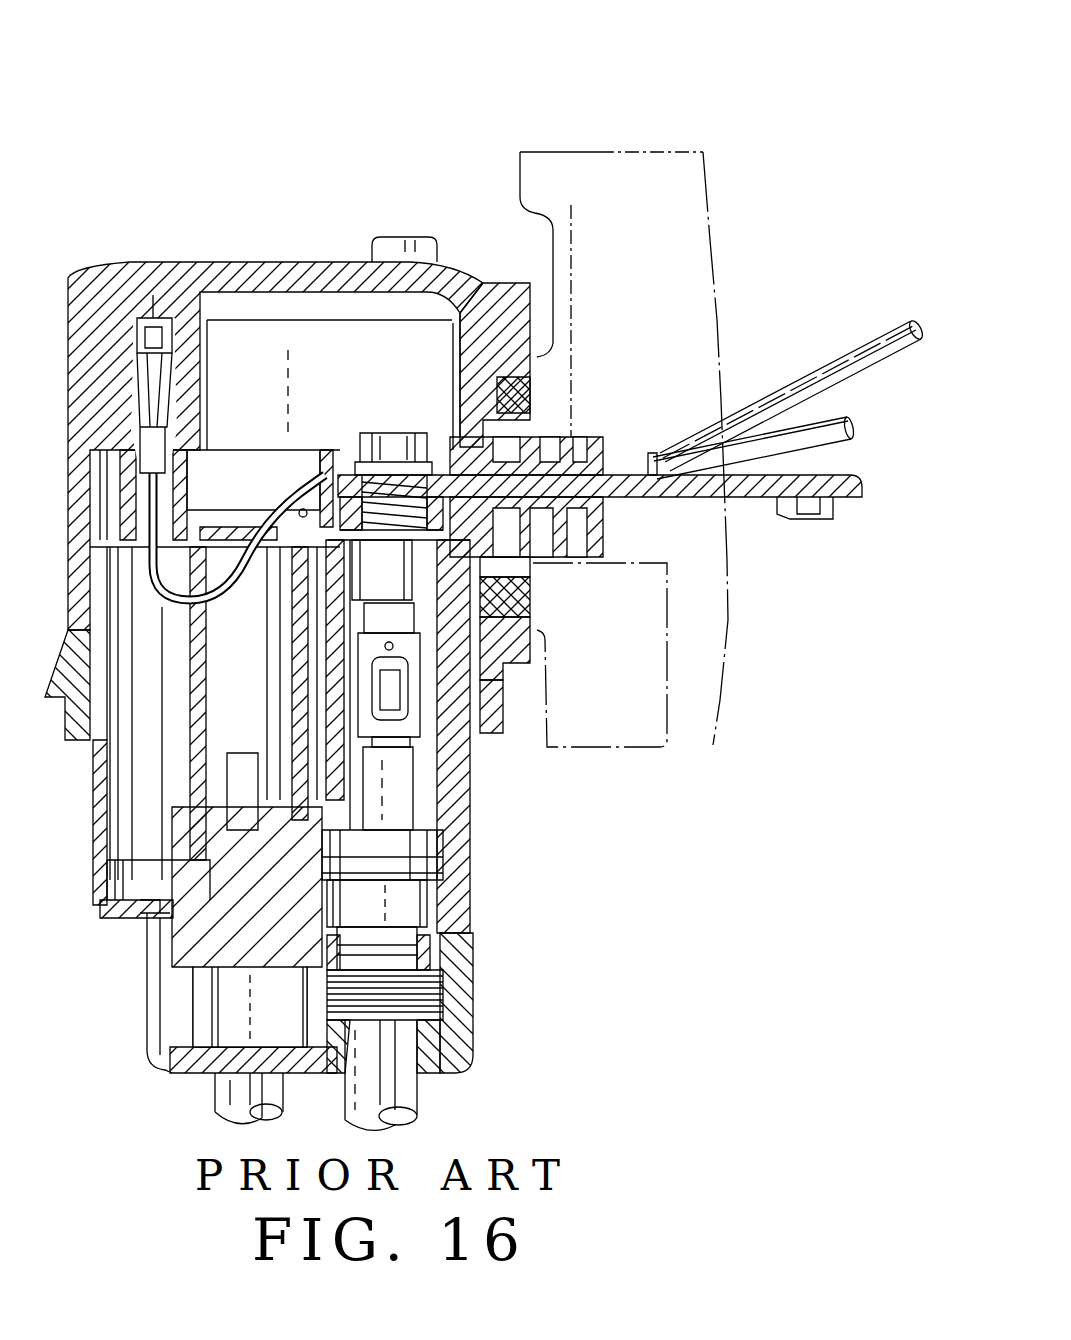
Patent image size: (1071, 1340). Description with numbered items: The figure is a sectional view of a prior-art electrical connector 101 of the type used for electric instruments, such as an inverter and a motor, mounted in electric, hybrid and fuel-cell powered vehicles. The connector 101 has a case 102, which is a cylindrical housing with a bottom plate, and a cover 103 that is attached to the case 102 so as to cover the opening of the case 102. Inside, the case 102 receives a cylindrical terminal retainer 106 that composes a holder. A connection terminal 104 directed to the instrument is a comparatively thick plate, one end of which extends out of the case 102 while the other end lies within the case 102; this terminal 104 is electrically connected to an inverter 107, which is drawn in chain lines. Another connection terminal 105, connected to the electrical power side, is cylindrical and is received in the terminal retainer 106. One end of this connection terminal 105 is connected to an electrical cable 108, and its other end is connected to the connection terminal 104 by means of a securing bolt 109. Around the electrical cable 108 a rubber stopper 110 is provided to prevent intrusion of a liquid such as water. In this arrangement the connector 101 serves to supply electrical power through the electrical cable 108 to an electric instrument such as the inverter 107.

The electrical connector 101 is at (453, 597).
The case 102 is at (472, 795).
The cover 103 is at (318, 258).
The connection terminal 104 is at (630, 445).
The connection terminal 105 is at (505, 690).
The terminal retainer 106 is at (533, 620).
The inverter 107 is at (606, 152).
The electrical cable 108 is at (420, 1093).
The securing bolt 109 is at (397, 430).
The rubber stopper 110 is at (458, 982).